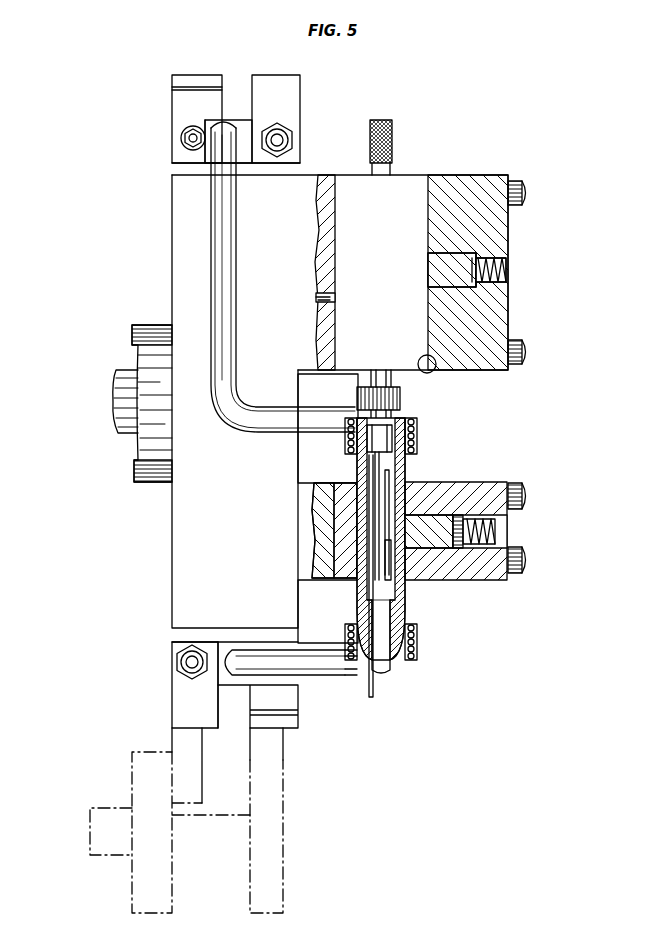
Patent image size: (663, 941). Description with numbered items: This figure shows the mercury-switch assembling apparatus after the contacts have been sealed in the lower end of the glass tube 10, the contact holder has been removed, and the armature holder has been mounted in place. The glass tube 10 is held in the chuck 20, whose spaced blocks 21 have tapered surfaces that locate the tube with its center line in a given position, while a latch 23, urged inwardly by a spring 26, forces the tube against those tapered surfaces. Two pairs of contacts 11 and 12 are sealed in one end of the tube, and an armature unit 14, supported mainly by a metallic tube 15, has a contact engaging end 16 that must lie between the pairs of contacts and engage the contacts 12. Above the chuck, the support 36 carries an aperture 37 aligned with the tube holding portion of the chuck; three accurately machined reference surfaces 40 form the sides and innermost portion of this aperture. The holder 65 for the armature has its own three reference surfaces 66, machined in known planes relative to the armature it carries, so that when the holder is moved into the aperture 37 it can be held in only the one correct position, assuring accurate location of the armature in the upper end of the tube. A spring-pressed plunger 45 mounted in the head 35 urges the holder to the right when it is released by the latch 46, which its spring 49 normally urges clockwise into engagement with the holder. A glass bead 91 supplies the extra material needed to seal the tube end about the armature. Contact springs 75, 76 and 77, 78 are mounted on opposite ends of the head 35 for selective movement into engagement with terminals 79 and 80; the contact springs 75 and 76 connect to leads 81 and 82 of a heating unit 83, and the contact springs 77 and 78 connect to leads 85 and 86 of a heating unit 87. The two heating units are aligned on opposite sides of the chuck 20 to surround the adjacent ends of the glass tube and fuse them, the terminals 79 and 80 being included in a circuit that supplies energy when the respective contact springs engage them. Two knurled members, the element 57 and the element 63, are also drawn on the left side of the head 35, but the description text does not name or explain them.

The glass envelope or tube 10 is at (357, 468).
The contacts 11 is at (372, 690).
The contacts 12 is at (390, 668).
The armature unit 14 is at (393, 495).
The metallic tube 15 is at (380, 465).
The contact engaging end 16 is at (384, 578).
The chuck 20 is at (515, 482).
The blocks 21 is at (343, 568).
The latch 23 is at (442, 548).
The spring 26 is at (508, 537).
The head 35 is at (172, 252).
The support 36 is at (510, 172).
The aperture 37 is at (432, 372).
The reference surfaces 40 is at (338, 247).
The spring-pressed plunger 45 is at (333, 300).
The latch 46 is at (472, 262).
The spring 49 is at (506, 272).
The adjusting knob 57 is at (160, 332).
The locking knob 63 is at (126, 383).
The holder 65 is at (432, 172).
The reference surfaces 66 is at (350, 185).
The contact spring 75 is at (172, 712).
The contact spring 76 is at (298, 722).
The contact spring 77 is at (204, 78).
The contact spring 78 is at (282, 80).
The terminal 79 is at (203, 765).
The terminal 80 is at (284, 768).
The lead 81 is at (314, 668).
The lead 82 is at (338, 672).
The heating unit 83 is at (418, 650).
The lead 85 is at (230, 413).
The lead 86 is at (335, 418).
The heating unit 87 is at (418, 435).
The glass bead 91 is at (404, 422).